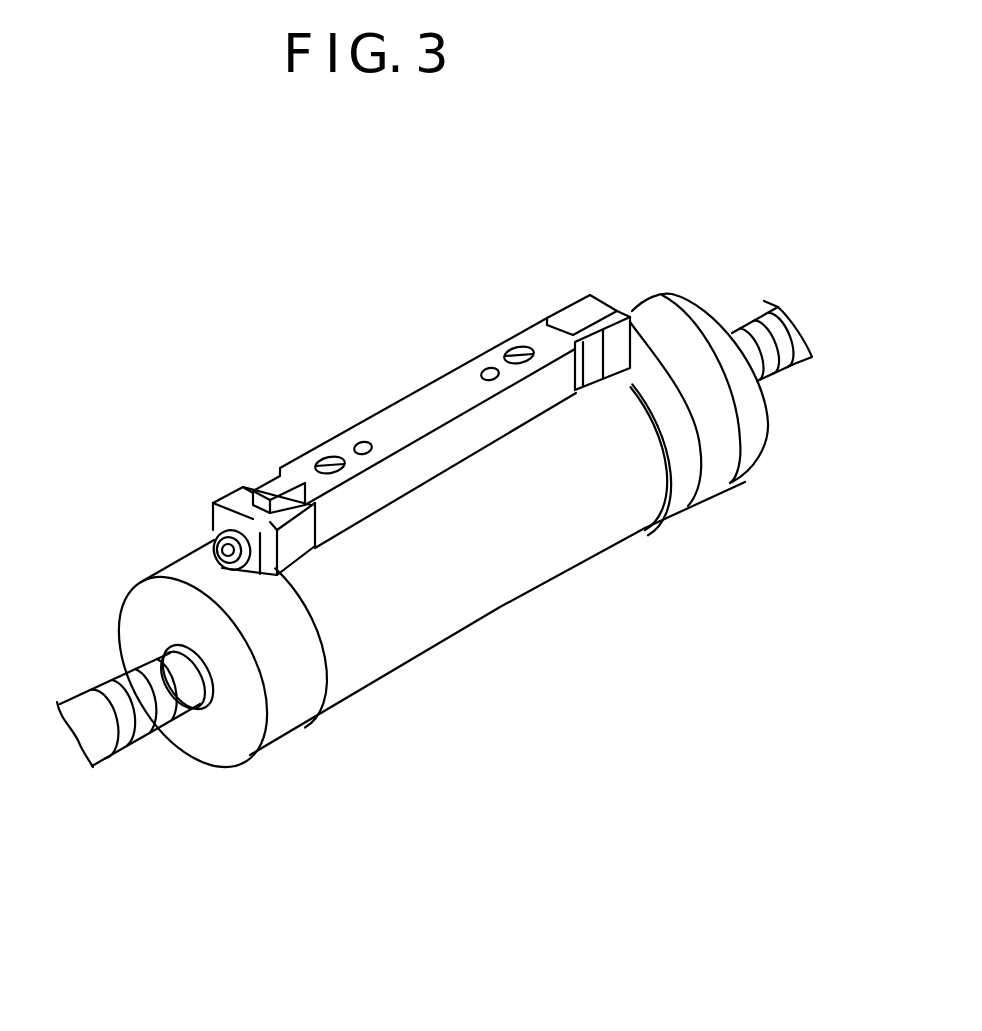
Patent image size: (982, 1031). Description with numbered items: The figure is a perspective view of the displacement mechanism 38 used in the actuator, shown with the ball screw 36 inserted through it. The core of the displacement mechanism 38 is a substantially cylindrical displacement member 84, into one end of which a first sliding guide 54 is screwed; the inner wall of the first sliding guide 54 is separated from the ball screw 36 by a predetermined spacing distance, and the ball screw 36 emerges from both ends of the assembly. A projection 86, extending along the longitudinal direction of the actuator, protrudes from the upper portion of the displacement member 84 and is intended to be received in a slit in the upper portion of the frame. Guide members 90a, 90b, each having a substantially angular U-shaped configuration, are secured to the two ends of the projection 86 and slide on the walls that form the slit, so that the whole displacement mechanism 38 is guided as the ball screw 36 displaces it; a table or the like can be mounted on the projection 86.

The ball screw 36 is at (107, 736).
The displacement mechanism 38 is at (627, 298).
The first sliding guide 54 is at (748, 448).
The displacement member 84 is at (517, 570).
The projection 86 is at (395, 382).
The guide member 90a is at (611, 318).
The guide member 90b is at (233, 507).